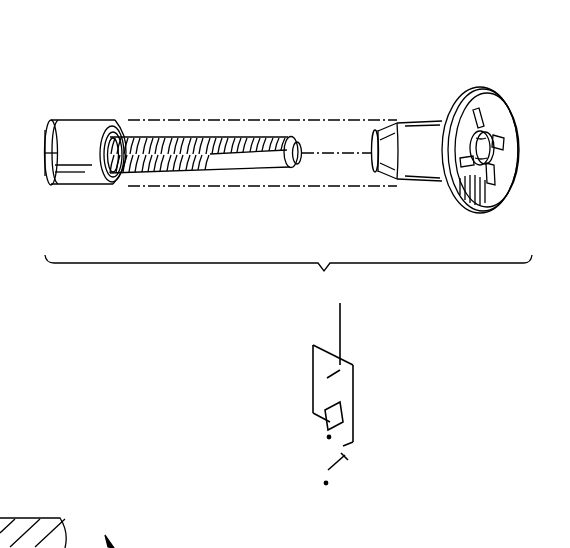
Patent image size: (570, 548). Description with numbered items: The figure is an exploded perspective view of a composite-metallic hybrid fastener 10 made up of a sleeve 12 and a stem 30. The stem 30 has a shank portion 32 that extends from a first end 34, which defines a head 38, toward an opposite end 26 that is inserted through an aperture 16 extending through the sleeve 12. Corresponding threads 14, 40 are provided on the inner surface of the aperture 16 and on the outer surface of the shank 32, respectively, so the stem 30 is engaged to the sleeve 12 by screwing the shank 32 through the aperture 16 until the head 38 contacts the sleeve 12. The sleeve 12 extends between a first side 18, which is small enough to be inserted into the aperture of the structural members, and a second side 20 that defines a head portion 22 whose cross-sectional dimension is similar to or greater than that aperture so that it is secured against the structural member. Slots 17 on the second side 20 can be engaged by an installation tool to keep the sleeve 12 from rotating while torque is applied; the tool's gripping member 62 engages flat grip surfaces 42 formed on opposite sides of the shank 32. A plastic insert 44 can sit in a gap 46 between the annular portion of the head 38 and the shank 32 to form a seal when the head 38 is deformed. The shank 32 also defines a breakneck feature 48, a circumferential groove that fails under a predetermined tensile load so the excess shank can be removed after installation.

The fastener 10 is at (398, 207).
The sleeve 12 is at (449, 134).
The threads 14 is at (490, 183).
The aperture 16 is at (491, 128).
The slots 17 is at (498, 157).
The first side 18 is at (372, 133).
The second side 20 is at (470, 102).
The head portion 22 is at (445, 120).
The bolt tip 26 is at (298, 162).
The stem 30 is at (172, 143).
The shank portion 32 is at (145, 170).
The first end 34 is at (43, 152).
The head 38 is at (60, 128).
The threads 40 is at (200, 106).
The flat grip surfaces 42 is at (250, 163).
The plastic insert 44 is at (300, 140).
The gap 46 is at (124, 180).
The breakneck feature 48 is at (152, 140).
The gripping member 62 is at (19, 270).